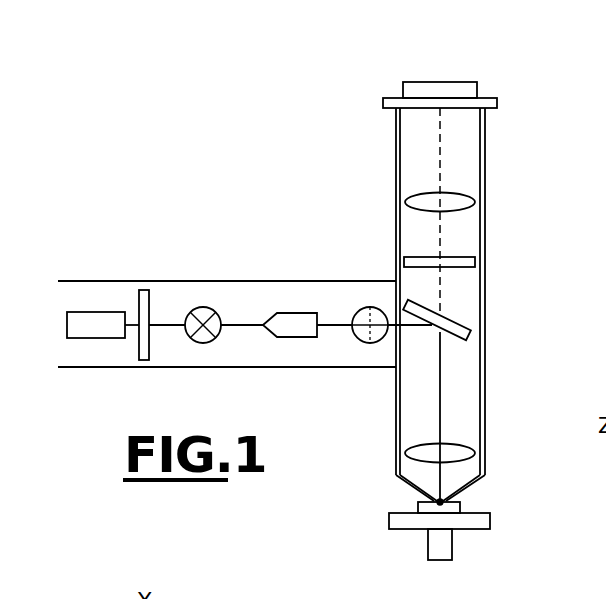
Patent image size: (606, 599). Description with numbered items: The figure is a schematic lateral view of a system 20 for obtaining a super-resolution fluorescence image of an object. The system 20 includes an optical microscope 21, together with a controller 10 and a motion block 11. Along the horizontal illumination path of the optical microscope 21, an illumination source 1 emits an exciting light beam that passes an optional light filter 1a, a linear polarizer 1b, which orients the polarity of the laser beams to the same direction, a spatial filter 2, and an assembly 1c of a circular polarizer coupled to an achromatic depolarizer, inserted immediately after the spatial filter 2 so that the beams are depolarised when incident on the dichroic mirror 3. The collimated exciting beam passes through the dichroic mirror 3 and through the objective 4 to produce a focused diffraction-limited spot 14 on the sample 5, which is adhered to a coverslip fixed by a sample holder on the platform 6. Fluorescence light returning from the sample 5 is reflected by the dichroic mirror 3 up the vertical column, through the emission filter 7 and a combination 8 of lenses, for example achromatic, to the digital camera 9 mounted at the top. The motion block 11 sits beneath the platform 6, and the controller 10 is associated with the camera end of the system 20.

The illumination source 1 is at (93, 320).
The light filter 1a is at (150, 305).
The linear polarizer 1b is at (203, 308).
The assembly of a circular polarizer coupled to an achromatic depolarizer 1c is at (357, 310).
The spatial filter 2 is at (292, 320).
The dichroic mirror 3 is at (457, 336).
The objective 4 is at (458, 452).
The sample 5 is at (462, 508).
The platform 6 is at (487, 522).
The emission filter 7 is at (462, 264).
The combination of lenses 8 is at (457, 197).
The digital camera 9 is at (487, 107).
The controller 10 is at (455, 88).
The motion block 11 is at (437, 545).
The focused diffraction-limited spot 14 is at (437, 502).
The system for obtaining a super-resolution fluorescence image 20 is at (538, 91).
The optical microscope 21 is at (396, 157).